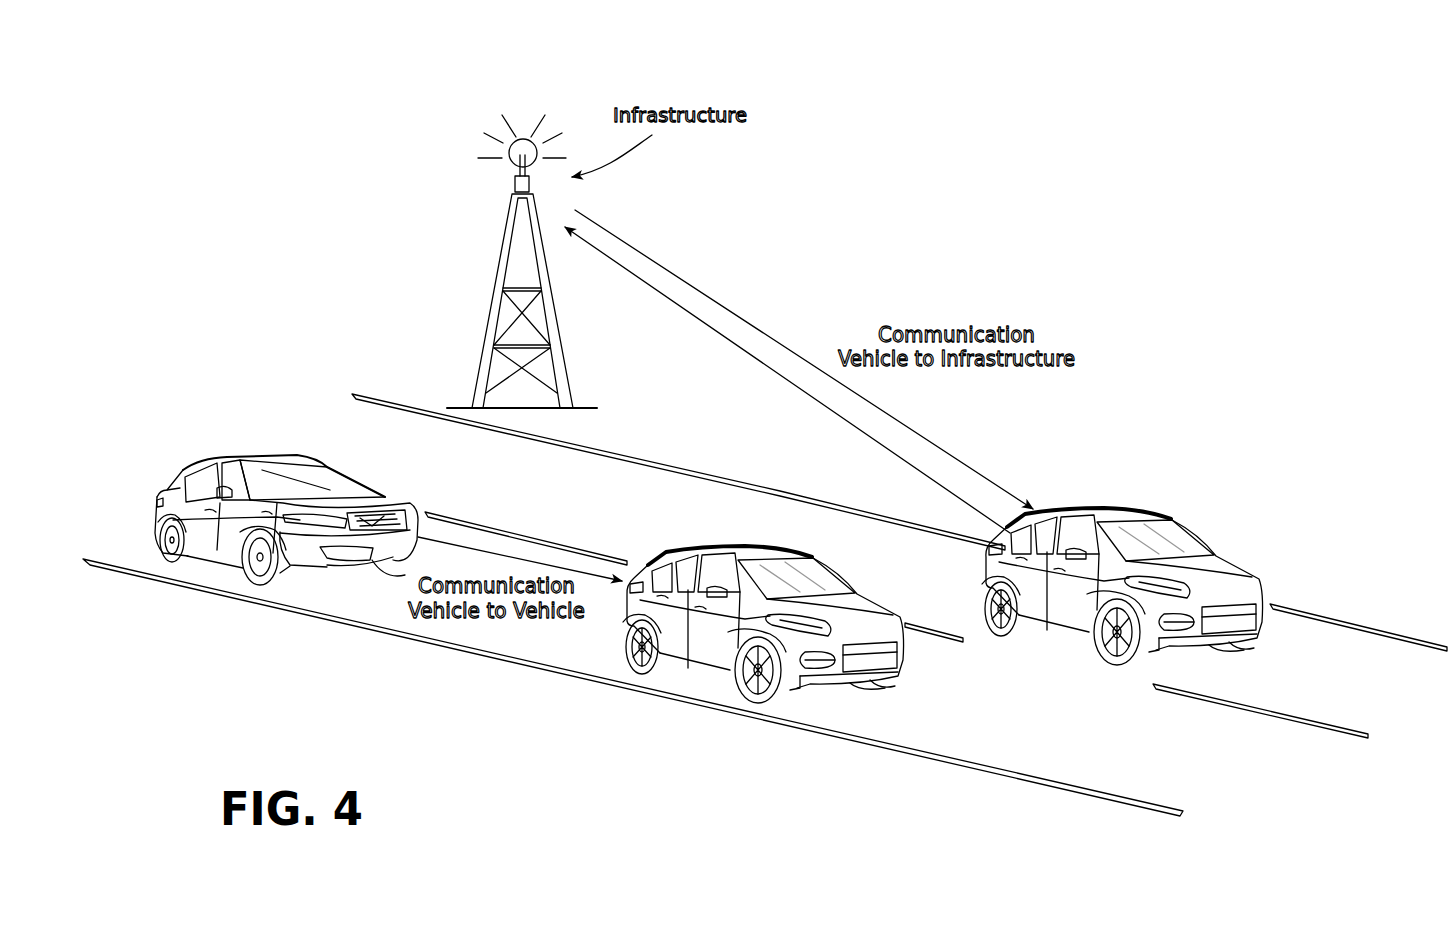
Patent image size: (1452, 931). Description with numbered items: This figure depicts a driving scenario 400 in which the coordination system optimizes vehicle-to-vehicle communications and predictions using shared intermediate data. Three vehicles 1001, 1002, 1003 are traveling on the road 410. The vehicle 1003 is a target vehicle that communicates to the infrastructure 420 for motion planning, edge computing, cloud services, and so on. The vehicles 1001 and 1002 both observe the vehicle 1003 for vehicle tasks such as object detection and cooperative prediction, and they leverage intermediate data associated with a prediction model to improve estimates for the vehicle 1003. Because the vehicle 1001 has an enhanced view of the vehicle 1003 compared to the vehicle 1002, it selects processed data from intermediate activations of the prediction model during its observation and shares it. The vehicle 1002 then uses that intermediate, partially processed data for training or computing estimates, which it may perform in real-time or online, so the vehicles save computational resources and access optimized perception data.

The driving scenario 400 is at (1117, 122).
The road 410 is at (1335, 662).
The infrastructure 420 is at (502, 247).
The vehicle 1001 is at (218, 537).
The vehicle 1002 is at (710, 642).
The vehicle 1003 is at (1173, 550).